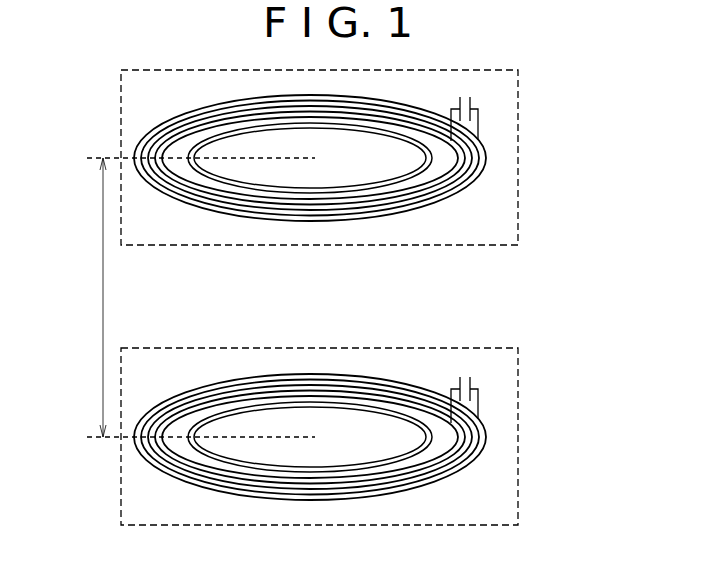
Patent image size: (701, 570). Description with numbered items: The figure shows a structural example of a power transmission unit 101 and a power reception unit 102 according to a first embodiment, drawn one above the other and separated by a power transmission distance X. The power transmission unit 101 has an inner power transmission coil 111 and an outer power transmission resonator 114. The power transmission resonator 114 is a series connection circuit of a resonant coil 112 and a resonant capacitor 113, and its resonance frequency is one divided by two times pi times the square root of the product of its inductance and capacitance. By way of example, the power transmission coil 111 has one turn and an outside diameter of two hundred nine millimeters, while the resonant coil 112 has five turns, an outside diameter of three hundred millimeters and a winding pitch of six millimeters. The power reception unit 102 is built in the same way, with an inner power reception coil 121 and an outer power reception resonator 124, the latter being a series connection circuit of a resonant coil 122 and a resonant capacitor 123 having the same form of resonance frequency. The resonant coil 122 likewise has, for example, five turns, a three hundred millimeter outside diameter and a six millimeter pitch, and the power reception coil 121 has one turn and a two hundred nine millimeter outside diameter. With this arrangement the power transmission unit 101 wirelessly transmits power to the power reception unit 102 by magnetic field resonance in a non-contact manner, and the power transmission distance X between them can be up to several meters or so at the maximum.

The power transmission unit 101 is at (120, 477).
The power reception unit 102 is at (120, 101).
The power transmission coil 111 is at (422, 437).
The resonant coil 112 is at (360, 437).
The resonant capacitor 113 is at (472, 380).
The power transmission resonator 114 is at (393, 430).
The power reception coil 121 is at (422, 157).
The resonant coil 122 is at (360, 158).
The resonant capacitor 123 is at (472, 100).
The power reception resonator 124 is at (392, 150).
The power transmission distance X is at (103, 252).